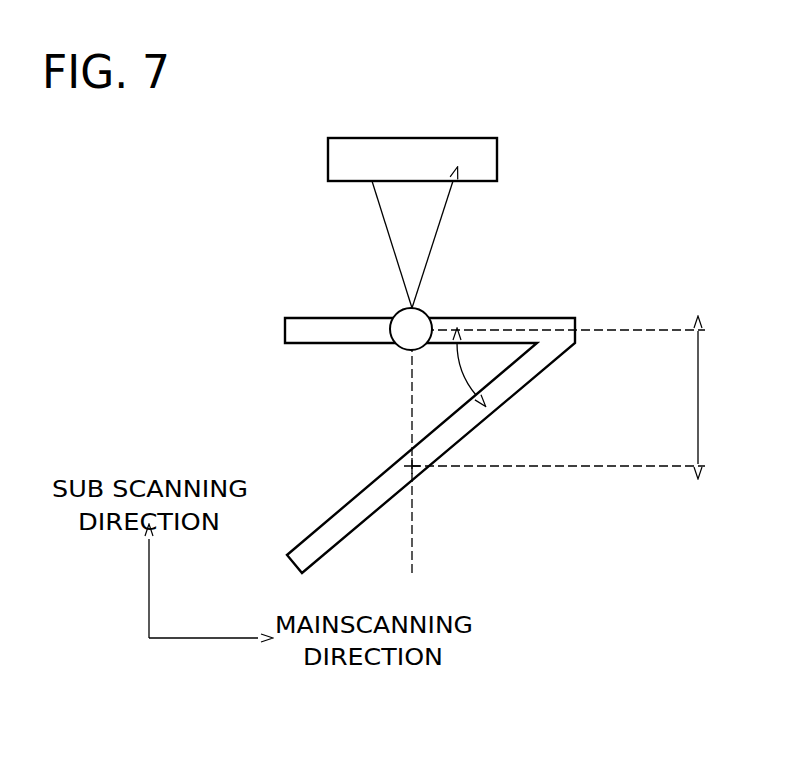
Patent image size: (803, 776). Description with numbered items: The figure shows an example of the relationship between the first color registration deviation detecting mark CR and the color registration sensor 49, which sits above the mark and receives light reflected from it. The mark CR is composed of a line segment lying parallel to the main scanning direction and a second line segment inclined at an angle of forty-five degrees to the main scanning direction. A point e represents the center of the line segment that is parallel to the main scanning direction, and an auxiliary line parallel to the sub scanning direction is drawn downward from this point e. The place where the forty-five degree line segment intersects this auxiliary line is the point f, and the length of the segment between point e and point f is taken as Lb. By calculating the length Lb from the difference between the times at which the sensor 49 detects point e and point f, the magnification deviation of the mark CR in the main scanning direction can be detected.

The color registration sensor 49 is at (404, 137).
The first color registration deviation detecting mark CR is at (308, 294).
The point e is at (413, 323).
The point f is at (408, 463).
The length Lb is at (698, 398).